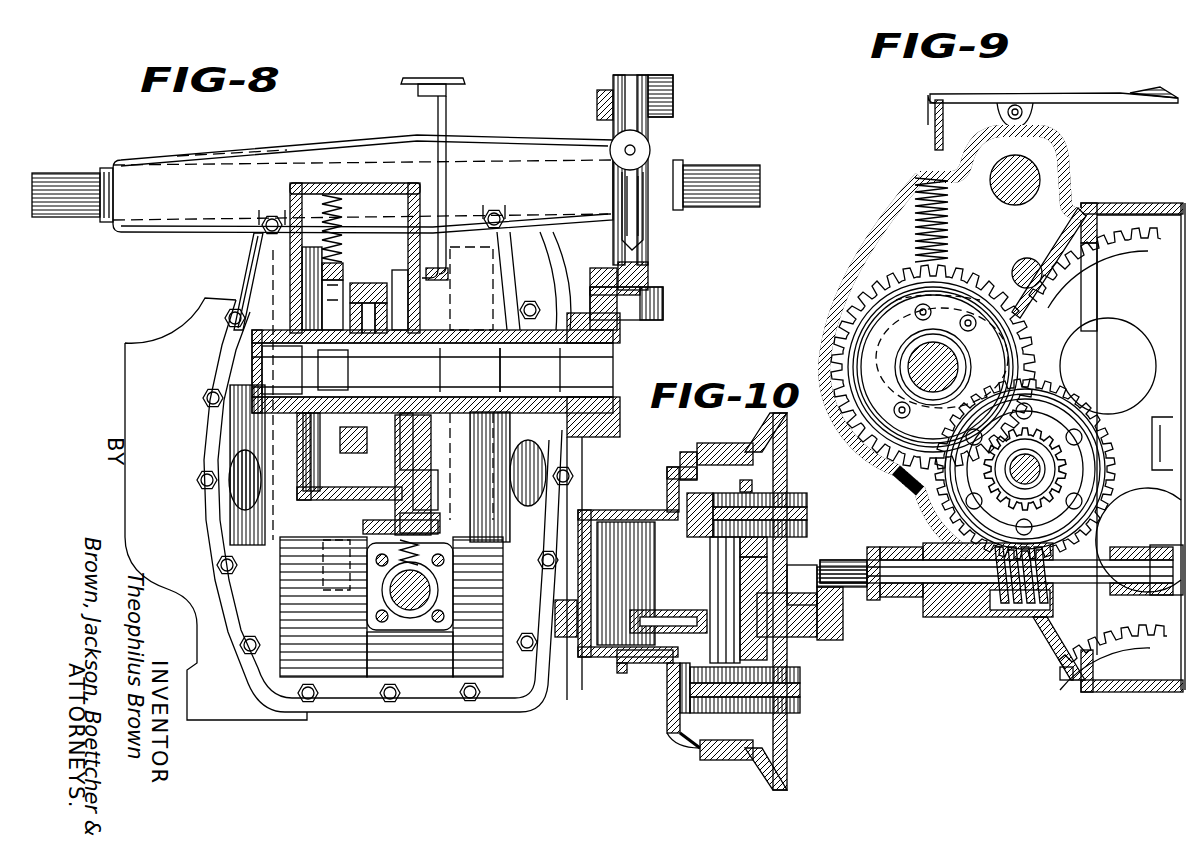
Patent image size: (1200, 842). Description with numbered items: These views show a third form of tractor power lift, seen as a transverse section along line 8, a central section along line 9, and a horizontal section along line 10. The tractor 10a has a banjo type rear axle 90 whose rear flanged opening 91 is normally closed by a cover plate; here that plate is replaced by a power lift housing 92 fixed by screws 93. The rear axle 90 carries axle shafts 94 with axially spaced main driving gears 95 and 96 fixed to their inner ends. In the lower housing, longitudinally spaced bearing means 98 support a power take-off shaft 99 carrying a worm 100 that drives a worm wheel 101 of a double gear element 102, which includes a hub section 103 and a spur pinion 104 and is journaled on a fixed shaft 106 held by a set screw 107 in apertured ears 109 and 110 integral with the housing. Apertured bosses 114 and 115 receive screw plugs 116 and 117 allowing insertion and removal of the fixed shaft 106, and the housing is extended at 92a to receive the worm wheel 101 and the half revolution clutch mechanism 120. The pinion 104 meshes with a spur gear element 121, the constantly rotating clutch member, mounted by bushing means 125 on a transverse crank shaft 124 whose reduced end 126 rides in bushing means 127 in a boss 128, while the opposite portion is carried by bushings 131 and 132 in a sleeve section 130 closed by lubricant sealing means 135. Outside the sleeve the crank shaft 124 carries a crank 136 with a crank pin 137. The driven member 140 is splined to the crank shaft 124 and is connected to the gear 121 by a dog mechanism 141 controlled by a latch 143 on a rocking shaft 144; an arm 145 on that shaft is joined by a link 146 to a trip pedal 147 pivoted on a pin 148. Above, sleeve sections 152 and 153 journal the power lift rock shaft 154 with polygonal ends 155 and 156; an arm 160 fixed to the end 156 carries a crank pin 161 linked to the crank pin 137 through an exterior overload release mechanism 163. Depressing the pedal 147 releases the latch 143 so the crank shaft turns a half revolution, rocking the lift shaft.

In FIG. 9, the section line 8— 8 is at (952, 659).
In FIG. 8, the section line 9— 9 is at (438, 76).
In FIG. 9, the section line 10— 10 is at (850, 458).
In FIG. 8, the tractor 10a is at (158, 324).
In FIG. 9, the tractor 10a is at (1160, 203).
In FIG. 8, the rear axle 90 is at (238, 305).
In FIG. 9, the rear axle 90 is at (1090, 210).
In FIG. 9, the rear flanged opening 91 is at (1100, 262).
In FIG. 8, the power lift housing 92 is at (224, 337).
In FIG. 10, the power lift housing 92 is at (680, 740).
In FIG. 9, the power lift housing 92 is at (912, 496).
In FIG. 8, the housing extension 92a is at (322, 512).
In FIG. 10, the housing extension 92a is at (637, 562).
In FIG. 9, the housing extension 92a is at (838, 426).
In FIG. 8, the screws 93 is at (205, 472).
In FIG. 9, the axle shafts 94 is at (1150, 505).
In FIG. 8, the main driving gear 95 is at (504, 214).
In FIG. 10, the main driving gear 95 is at (790, 708).
In FIG. 8, the main driving gear 96 is at (270, 210).
In FIG. 10, the main driving gear 96 is at (794, 497).
In FIG. 9, the main driving gear 96 is at (1116, 394).
In FIG. 9, the bearing means 98 is at (950, 618).
In FIG. 8, the power take-off shaft 99 is at (562, 638).
In FIG. 10, the power take-off shaft 99 is at (560, 640).
In FIG. 9, the power take-off shaft 99 is at (876, 600).
In FIG. 9, the worm 100 is at (1010, 606).
In FIG. 8, the worm wheel 101 is at (430, 470).
In FIG. 10, the worm wheel 101 is at (622, 655).
In FIG. 9, the worm wheel 101 is at (1085, 382).
In FIG. 8, the double gear element 102 is at (432, 497).
In FIG. 10, the double gear element 102 is at (650, 663).
In FIG. 9, the double gear element 102 is at (1040, 384).
In FIG. 10, the hub section 103 is at (765, 572).
In FIG. 9, the hub section 103 is at (1055, 453).
In FIG. 8, the spur pinion 104 is at (363, 523).
In FIG. 10, the spur pinion 104 is at (765, 600).
In FIG. 9, the spur pinion 104 is at (1040, 463).
In FIG. 10, the fixed shaft 106 is at (750, 510).
In FIG. 9, the fixed shaft 106 is at (1020, 500).
In FIG. 10, the set screw 107 is at (770, 545).
In FIG. 8, the apertured ear 109 is at (431, 520).
In FIG. 10, the apertured ear 109 is at (667, 695).
In FIG. 8, the apertured ear 110 is at (323, 540).
In FIG. 10, the apertured ear 110 is at (714, 488).
In FIG. 8, the apertured boss 114 is at (240, 488).
In FIG. 10, the apertured boss 114 is at (692, 458).
In FIG. 8, the apertured boss 115 is at (540, 475).
In FIG. 10, the apertured boss 115 is at (697, 757).
In FIG. 10, the screw plug 116 is at (725, 448).
In FIG. 10, the screw plug 117 is at (725, 763).
In FIG. 8, the half revolution clutch mechanism 120 is at (365, 285).
In FIG. 9, the half revolution clutch mechanism 120 is at (868, 352).
In FIG. 8, the spur gear element 121 is at (380, 300).
In FIG. 9, the spur gear element 121 is at (845, 313).
In FIG. 8, the crank shaft 124 is at (590, 370).
In FIG. 8, the bushing means 125 is at (358, 370).
In FIG. 9, the bushing means 125 is at (908, 367).
In FIG. 8, the reduced end 126 is at (250, 368).
In FIG. 8, the bushing means 127 is at (203, 398).
In FIG. 8, the boss 128 is at (225, 318).
In FIG. 8, the sleeve section 130 is at (470, 335).
In FIG. 8, the bushing 131 is at (470, 370).
In FIG. 8, the bushing 132 is at (530, 370).
In FIG. 8, the lubricant sealing means 135 is at (600, 433).
In FIG. 8, the crank 136 is at (605, 398).
In FIG. 8, the crank pin 137 is at (662, 305).
In FIG. 8, the driven member 140 is at (283, 371).
In FIG. 9, the dog mechanism 141 is at (914, 322).
In FIG. 8, the latch 143 is at (342, 252).
In FIG. 9, the latch 143 is at (944, 262).
In FIG. 8, the shaft 144 is at (244, 300).
In FIG. 9, the shaft 144 is at (1025, 258).
In FIG. 8, the arm 145 is at (432, 282).
In FIG. 8, the link 146 is at (447, 192).
In FIG. 9, the link 146 is at (935, 133).
In FIG. 8, the trip pedal 147 is at (415, 80).
In FIG. 9, the trip pedal 147 is at (1066, 98).
In FIG. 9, the pin 148 is at (1017, 105).
In FIG. 8, the sleeve section 152 is at (212, 177).
In FIG. 8, the sleeve section 153 is at (548, 175).
In FIG. 8, the power lift rock shaft 154 is at (103, 168).
In FIG. 9, the power lift rock shaft 154 is at (1030, 168).
In FIG. 8, the end 155 is at (62, 180).
In FIG. 8, the end 156 is at (706, 162).
In FIG. 8, the arm 160 is at (655, 138).
In FIG. 8, the crank pin 161 is at (602, 90).
In FIG. 8, the overload release mechanism 163 is at (644, 238).